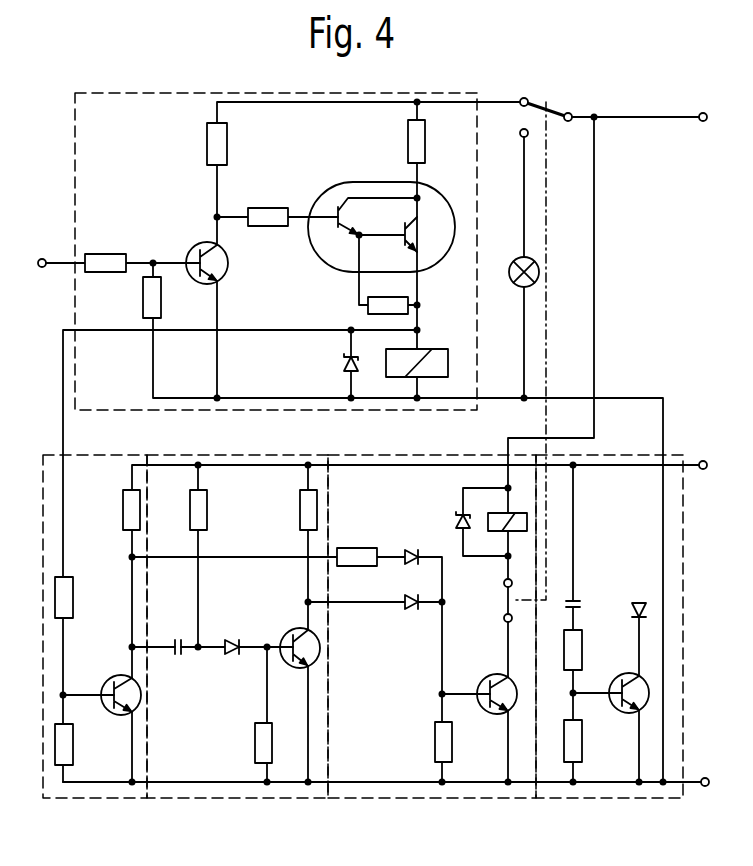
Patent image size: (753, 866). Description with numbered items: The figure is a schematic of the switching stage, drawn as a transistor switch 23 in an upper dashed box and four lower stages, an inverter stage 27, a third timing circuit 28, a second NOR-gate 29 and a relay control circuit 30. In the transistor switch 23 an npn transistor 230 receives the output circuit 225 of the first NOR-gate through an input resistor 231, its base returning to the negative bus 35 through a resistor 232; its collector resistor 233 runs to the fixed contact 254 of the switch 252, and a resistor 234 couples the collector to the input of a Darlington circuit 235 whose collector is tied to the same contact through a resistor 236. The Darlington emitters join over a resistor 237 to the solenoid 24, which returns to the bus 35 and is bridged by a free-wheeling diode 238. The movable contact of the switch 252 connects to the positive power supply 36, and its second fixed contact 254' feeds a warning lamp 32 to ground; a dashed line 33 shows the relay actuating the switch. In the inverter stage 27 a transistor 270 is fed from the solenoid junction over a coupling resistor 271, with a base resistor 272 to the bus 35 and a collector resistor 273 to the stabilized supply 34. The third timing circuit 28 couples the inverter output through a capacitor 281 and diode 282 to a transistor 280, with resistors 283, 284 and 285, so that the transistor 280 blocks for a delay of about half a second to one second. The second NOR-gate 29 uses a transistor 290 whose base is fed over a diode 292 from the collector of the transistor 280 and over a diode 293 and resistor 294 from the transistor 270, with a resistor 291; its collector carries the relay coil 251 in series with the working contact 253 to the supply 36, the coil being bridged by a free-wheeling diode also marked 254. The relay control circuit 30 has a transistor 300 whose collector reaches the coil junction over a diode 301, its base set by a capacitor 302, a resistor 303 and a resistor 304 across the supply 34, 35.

The transistor switch 23 is at (75, 117).
The solenoid 24 is at (440, 349).
The inverter stage 27 is at (107, 798).
The third timing circuit 28 is at (225, 798).
The second NOR-gate 29 is at (408, 798).
The relay control circuit 30 is at (607, 798).
The warning lamp 32 is at (509, 271).
The dashed line 33 is at (548, 305).
The stabilized supply 34 is at (703, 461).
The negative bus 35 is at (633, 397).
The positive power supply 36 is at (703, 113).
The output circuit 225 is at (42, 267).
The npn transistor 230 is at (206, 243).
The input resistor 231 is at (88, 254).
The resistor 232 is at (143, 301).
The collector resistor 233 is at (207, 144).
The resistor 234 is at (258, 208).
The Darlington circuit 235 is at (358, 182).
The resistor 236 is at (408, 140).
The resistor 237 is at (378, 297).
The free-wheeling diode 238 is at (344, 357).
The relay coil 251 is at (489, 515).
The switch 252 is at (568, 113).
The working contact 253 is at (504, 600).
The fixed contact 254 is at (493, 309).
The second fixed contact 254' is at (506, 193).
The npn transistor 270 is at (108, 682).
The coupling resistor 271 is at (73, 597).
The base resistor 272 is at (73, 738).
The resistor 273 is at (123, 510).
The transistor 280 is at (290, 631).
The capacitor 281 is at (181, 626).
The diode 282 is at (232, 640).
The resistor 283 is at (207, 505).
The resistor 284 is at (255, 745).
The resistor 285 is at (300, 515).
The transistor 290 is at (497, 675).
The resistor 291 is at (435, 742).
The diode 292 is at (405, 596).
The diode 293 is at (411, 549).
The resistor 294 is at (360, 548).
The npn transistor 300 is at (628, 713).
The diode 301 is at (632, 612).
The capacitor 302 is at (583, 602).
The resistor 303 is at (582, 650).
The resistor 304 is at (583, 748).